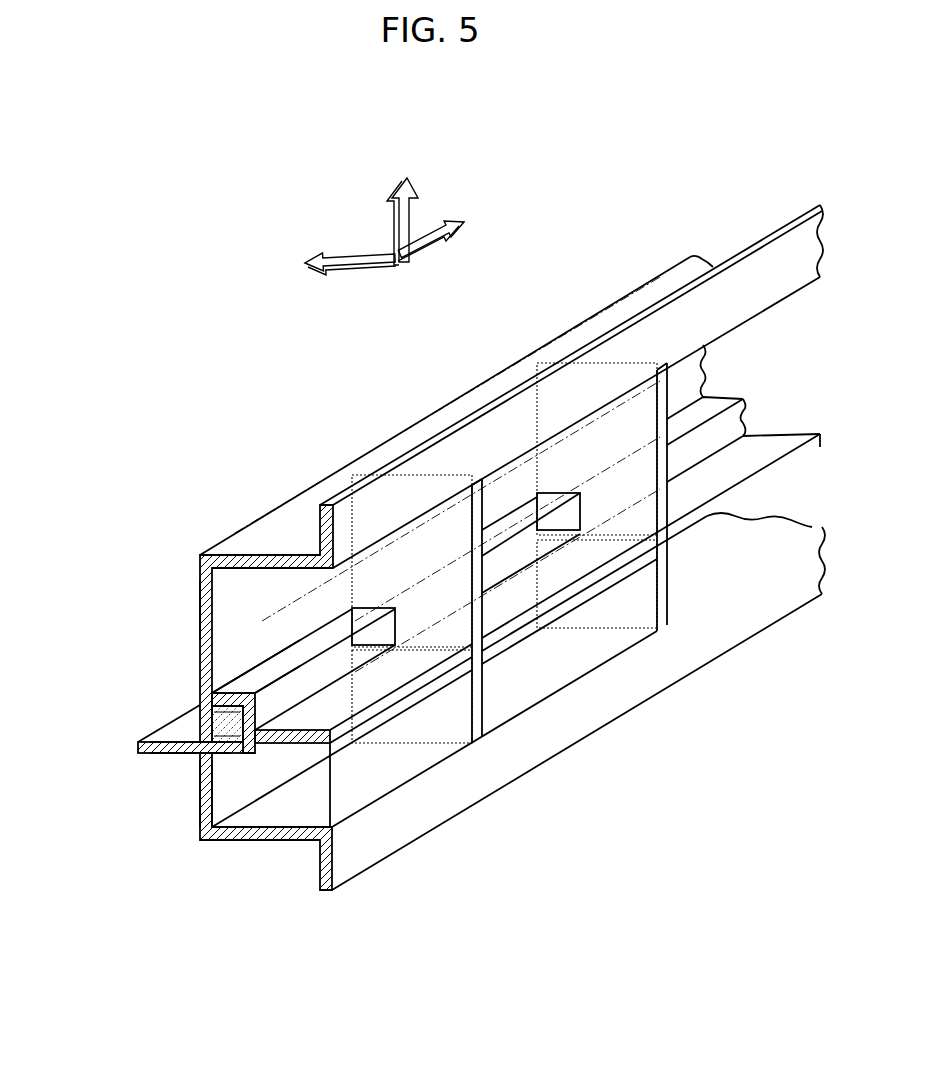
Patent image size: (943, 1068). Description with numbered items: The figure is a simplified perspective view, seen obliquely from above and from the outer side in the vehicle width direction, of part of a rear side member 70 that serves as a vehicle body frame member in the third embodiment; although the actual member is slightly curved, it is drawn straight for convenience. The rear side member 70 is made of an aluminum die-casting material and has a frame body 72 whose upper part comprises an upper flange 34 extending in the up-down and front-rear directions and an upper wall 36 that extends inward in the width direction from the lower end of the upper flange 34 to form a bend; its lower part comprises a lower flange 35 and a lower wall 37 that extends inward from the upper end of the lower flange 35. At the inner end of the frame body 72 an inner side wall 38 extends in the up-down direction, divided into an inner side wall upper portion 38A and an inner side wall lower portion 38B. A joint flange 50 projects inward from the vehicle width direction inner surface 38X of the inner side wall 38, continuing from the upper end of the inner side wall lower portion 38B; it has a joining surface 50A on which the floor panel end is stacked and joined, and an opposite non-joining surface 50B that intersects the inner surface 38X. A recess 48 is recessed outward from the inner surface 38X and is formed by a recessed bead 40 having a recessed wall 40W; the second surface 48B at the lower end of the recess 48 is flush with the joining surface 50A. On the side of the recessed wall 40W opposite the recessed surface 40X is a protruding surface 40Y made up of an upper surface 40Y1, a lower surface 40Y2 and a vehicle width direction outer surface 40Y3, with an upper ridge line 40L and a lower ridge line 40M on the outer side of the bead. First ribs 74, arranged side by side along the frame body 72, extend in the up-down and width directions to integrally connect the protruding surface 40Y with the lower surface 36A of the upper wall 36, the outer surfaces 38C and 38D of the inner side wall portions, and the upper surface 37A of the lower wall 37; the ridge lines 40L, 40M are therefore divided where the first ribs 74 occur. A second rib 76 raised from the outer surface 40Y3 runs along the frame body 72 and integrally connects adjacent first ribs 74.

The rear side member 70 is at (217, 352).
The frame body 72 is at (372, 405).
The first ribs 74 is at (588, 432).
The second rib 76 is at (537, 633).
The upper flange 34 is at (730, 312).
The lower flange 35 is at (748, 618).
The upper wall 36 is at (258, 532).
The lower surface of the upper wall 36A is at (283, 572).
The lower wall 37 is at (243, 846).
The upper surface of the lower wall 37A is at (268, 842).
The inner side wall 38 is at (186, 592).
The inner side wall upper portion 38A is at (192, 602).
The inner side wall lower portion 38B is at (196, 810).
The vehicle width direction outer surface of the inner side wall upper portion 38C is at (208, 572).
The vehicle width direction outer surface of the inner side wall lower portion 38D is at (220, 798).
The vehicle width direction inner surface of the inner side wall 38X is at (190, 799).
The recessed bead 40 is at (215, 700).
The upper ridge line 40L is at (497, 547).
The lower ridge line 40M is at (388, 714).
The recessed wall 40W is at (222, 718).
The recessed surface 40X is at (222, 733).
The protruding surface 40Y is at (352, 650).
The upper surface 40Y1 is at (262, 690).
The lower surface 40Y2 is at (240, 770).
The vehicle width direction outer surface 40Y3 is at (306, 676).
The recess 48 is at (205, 712).
The second surface 48B is at (268, 760).
The joint flange 50 is at (137, 752).
The joining surface 50A is at (136, 744).
The non-joining surface 50B is at (150, 756).